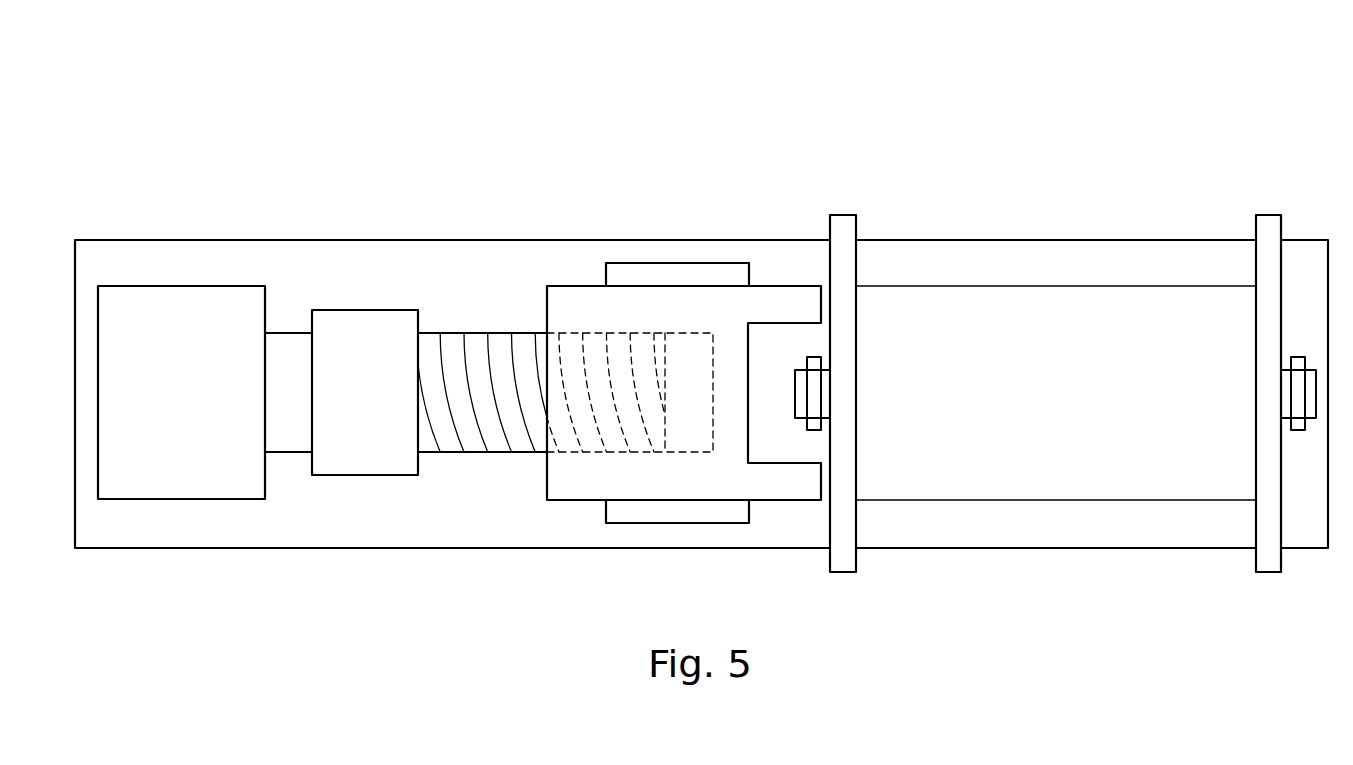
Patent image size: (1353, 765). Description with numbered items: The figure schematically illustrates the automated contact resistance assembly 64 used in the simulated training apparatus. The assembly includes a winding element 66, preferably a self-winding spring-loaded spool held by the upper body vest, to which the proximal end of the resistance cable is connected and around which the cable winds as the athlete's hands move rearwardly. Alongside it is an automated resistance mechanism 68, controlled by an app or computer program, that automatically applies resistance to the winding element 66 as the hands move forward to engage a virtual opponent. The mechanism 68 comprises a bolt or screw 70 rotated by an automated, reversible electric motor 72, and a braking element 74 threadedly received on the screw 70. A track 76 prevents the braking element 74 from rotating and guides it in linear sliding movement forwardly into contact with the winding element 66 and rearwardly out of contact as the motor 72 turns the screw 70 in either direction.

The automated contact resistance assembly 64 is at (347, 120).
The winding element 66 is at (1057, 295).
The automated resistance mechanism 68 is at (453, 548).
The bolt or screw 70 is at (478, 332).
The reversible electric motor 72 is at (197, 410).
The braking element 74 is at (770, 286).
The track 76 is at (681, 524).